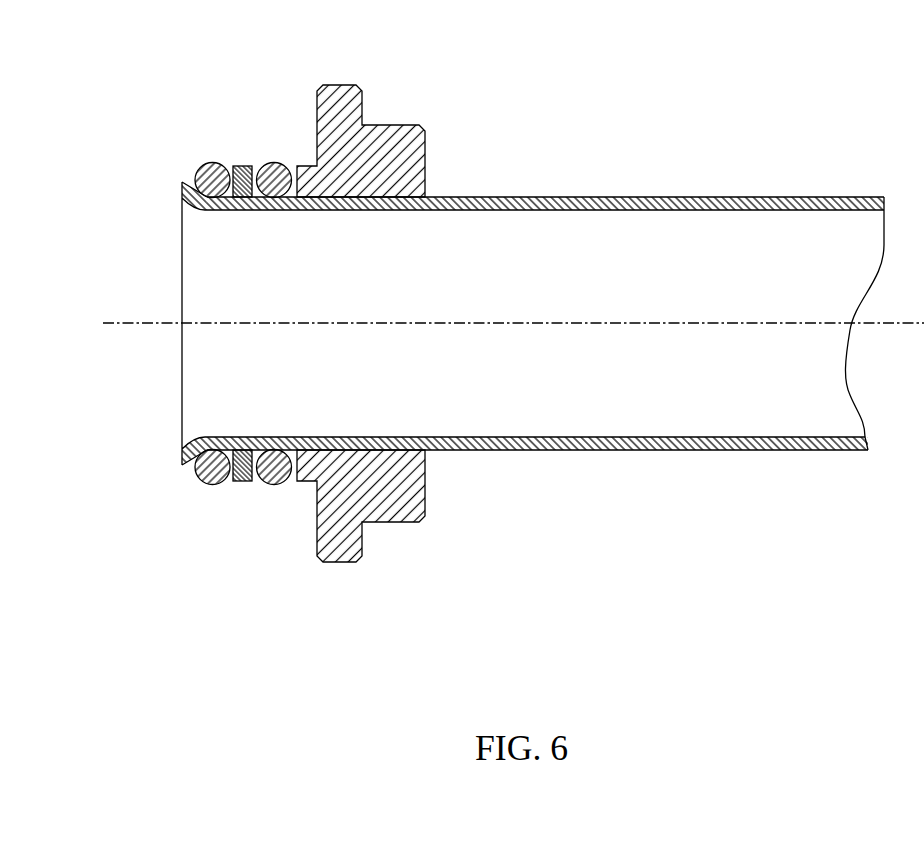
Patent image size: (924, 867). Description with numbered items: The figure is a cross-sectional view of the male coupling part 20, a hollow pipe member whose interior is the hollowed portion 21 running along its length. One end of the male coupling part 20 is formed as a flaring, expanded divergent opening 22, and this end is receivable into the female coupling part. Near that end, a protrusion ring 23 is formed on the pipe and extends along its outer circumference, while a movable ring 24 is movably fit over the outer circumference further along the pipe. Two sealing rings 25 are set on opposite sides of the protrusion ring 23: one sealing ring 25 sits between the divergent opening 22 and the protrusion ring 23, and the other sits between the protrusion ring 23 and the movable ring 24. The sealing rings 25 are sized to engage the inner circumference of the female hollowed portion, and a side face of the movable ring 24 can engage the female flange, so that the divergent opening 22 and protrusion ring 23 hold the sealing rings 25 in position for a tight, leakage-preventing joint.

The male coupling part 20 is at (551, 205).
The hollowed portion 21 is at (650, 410).
The divergent opening 22 is at (190, 203).
The protrusion ring 23 is at (240, 168).
The movable ring 24 is at (390, 127).
The sealing rings 25 is at (200, 173).